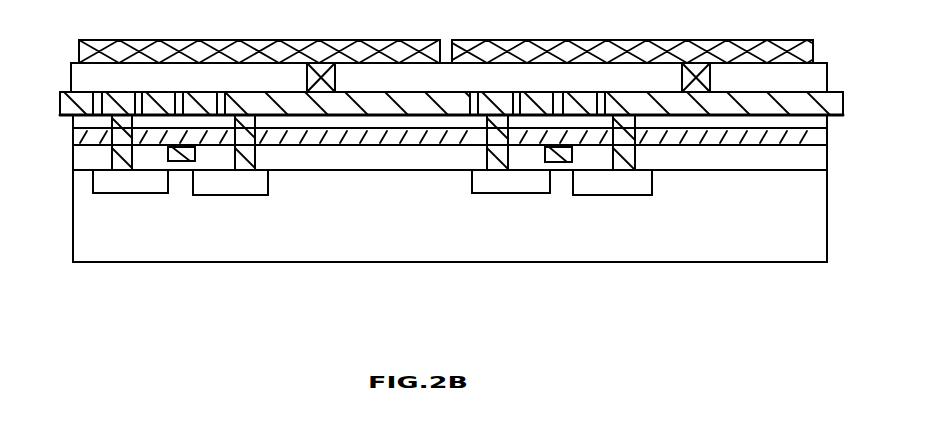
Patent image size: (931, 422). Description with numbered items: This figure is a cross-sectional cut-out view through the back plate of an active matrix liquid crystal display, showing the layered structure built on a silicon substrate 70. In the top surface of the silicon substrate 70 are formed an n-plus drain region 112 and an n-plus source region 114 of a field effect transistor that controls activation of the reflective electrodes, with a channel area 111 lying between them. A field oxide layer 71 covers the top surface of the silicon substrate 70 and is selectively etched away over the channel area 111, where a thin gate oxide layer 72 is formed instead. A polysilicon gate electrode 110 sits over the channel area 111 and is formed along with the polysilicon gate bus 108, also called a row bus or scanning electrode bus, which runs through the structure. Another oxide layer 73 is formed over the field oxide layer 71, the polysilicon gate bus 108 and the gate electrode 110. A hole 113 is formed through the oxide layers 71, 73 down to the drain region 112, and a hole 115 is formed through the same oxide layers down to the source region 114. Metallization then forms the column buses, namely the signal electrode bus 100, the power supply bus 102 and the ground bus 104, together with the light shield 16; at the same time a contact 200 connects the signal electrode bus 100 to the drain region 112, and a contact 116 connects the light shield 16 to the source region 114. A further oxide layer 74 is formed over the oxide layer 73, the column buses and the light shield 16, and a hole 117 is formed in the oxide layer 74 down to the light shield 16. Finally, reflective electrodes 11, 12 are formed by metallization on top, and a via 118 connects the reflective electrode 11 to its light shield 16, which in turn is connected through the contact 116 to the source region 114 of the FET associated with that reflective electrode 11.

The reflective electrode 11 is at (195, 50).
The reflective electrode 12 is at (535, 52).
The light shield 16 is at (277, 97).
The silicon substrate 70 is at (343, 243).
The field oxide layer 71 is at (185, 166).
The gate oxide layer 72 is at (207, 155).
The oxide layer 73 is at (378, 108).
The oxide layer 74 is at (370, 78).
The signal electrode bus 100 is at (123, 92).
The power supply bus 102 is at (167, 93).
The ground bus 104 is at (192, 93).
The polysilicon gate bus 108 is at (348, 138).
The polysilicon gate electrode 110 is at (180, 159).
The channel area 111 is at (182, 182).
The drain region 112 is at (130, 182).
The hole 113 is at (118, 157).
The source region 114 is at (228, 186).
The hole 115 is at (257, 156).
The contact 116 is at (257, 163).
The hole 117 is at (349, 64).
The via 118 is at (307, 74).
The contact 200 is at (120, 151).